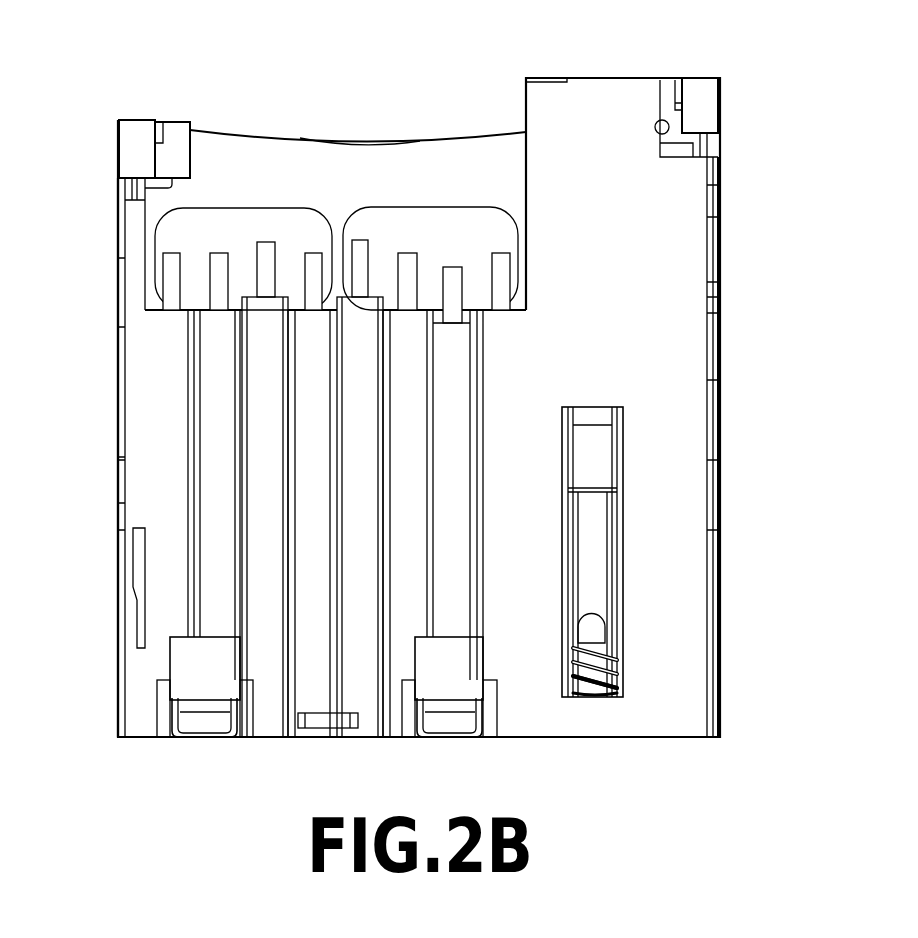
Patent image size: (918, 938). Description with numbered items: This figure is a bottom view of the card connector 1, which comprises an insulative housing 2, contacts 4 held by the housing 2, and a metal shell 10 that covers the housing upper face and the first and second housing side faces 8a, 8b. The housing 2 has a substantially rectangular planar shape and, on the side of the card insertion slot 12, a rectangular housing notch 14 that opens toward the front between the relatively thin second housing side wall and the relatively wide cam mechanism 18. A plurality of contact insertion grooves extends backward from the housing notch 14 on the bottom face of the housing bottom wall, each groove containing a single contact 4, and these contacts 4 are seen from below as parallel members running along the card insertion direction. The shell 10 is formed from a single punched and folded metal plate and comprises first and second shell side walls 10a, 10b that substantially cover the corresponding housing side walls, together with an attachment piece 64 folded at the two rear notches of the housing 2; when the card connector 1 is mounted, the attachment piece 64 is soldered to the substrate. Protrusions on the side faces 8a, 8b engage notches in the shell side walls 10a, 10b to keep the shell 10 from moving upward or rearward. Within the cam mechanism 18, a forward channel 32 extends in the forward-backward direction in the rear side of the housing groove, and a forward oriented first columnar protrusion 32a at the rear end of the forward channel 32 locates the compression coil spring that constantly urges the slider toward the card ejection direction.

The card connector 1 is at (738, 158).
The insulative housing 2 is at (618, 90).
The contact 4 is at (356, 271).
The first housing side face 8a is at (717, 373).
The second housing side face 8b is at (120, 500).
The metal shell 10 is at (262, 133).
The first shell side wall 10a is at (720, 250).
The second shell side wall 10b is at (118, 242).
The card insertion slot 12 is at (378, 118).
The housing notch 14 is at (525, 152).
The cam mechanism 18 is at (600, 455).
The forward channel 32 is at (593, 537).
The first columnar protrusion 32a is at (590, 645).
The attachment piece 64 is at (208, 723).